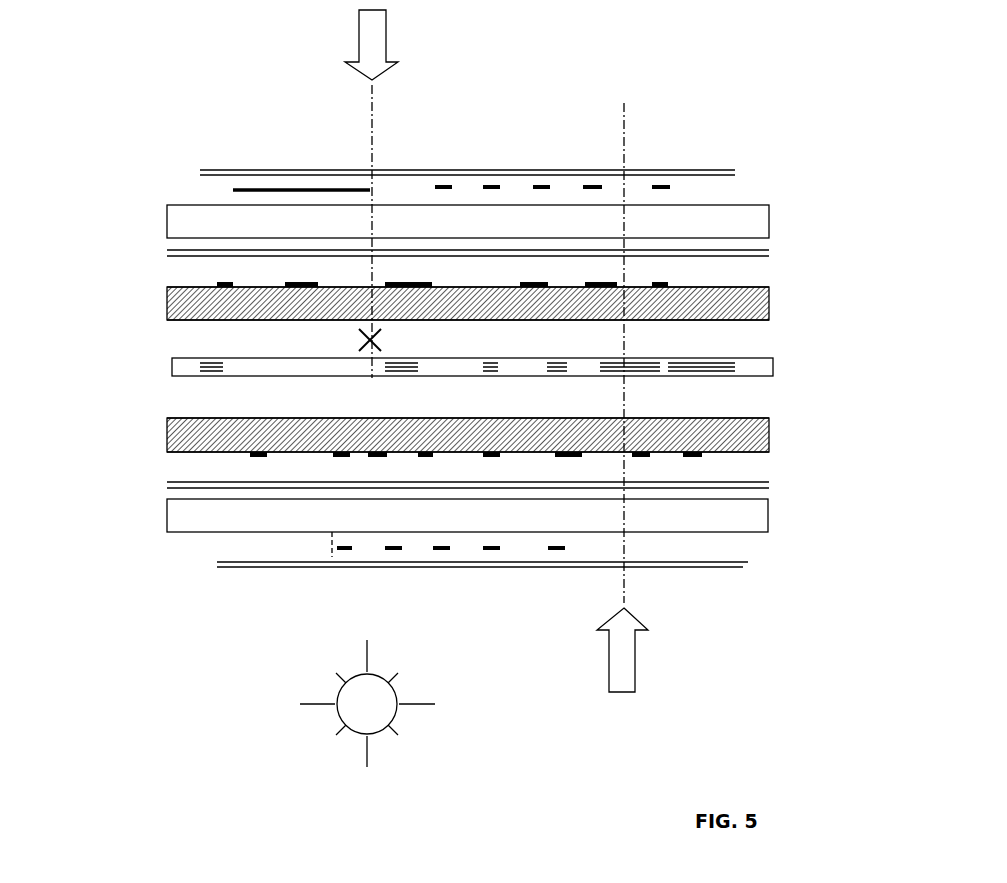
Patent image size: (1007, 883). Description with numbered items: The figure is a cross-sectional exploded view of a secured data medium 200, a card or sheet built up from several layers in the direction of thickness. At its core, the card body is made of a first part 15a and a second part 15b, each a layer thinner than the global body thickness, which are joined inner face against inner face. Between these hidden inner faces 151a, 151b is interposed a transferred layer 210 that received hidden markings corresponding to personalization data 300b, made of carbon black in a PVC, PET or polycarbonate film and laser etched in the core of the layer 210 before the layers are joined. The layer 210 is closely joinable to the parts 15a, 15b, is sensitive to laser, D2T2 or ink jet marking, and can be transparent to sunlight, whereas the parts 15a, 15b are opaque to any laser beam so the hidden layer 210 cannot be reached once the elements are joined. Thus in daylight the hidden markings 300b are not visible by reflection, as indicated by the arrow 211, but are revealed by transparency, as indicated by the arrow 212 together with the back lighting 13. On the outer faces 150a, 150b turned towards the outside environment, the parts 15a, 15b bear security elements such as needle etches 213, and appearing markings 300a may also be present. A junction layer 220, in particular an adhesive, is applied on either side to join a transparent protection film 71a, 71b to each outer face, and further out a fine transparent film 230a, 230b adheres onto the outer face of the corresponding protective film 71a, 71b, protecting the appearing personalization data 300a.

The arrow 211 is at (368, 27).
The arrow 212 is at (627, 652).
The transparent film 230a is at (213, 171).
The transparent film 230b is at (740, 566).
The appearing markings 300a is at (585, 185).
The hidden markings 300b is at (628, 373).
The transparent protection film 71a is at (755, 217).
The transparent protection film 71b is at (745, 521).
The junction layer 220 is at (172, 250).
The first part 15a is at (176, 300).
The second part 15b is at (176, 437).
The outer face 150a is at (748, 284).
The inner face 151a is at (750, 321).
The outer face 150b is at (756, 453).
The inner face 151b is at (750, 419).
The needle etches 213 is at (598, 283).
The transferred layer 210 is at (176, 366).
The data medium 200 is at (158, 560).
The back lighting 13 is at (340, 690).